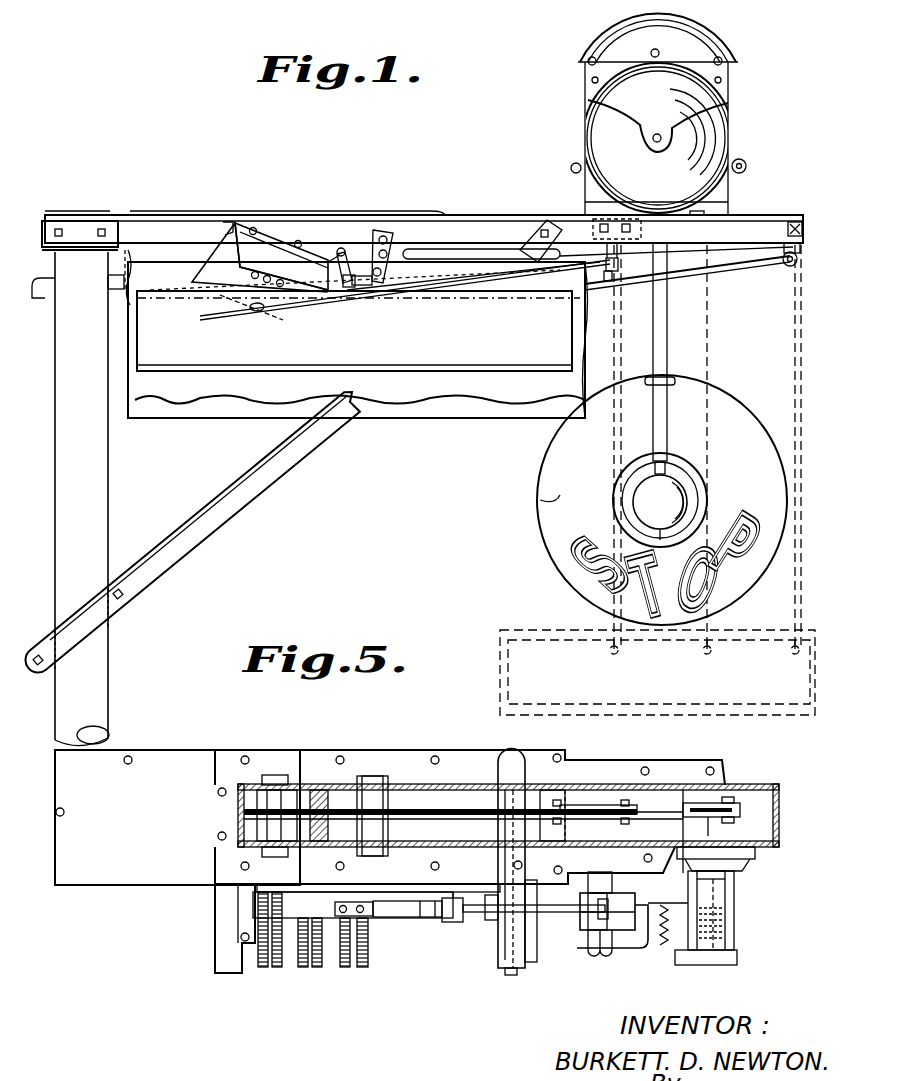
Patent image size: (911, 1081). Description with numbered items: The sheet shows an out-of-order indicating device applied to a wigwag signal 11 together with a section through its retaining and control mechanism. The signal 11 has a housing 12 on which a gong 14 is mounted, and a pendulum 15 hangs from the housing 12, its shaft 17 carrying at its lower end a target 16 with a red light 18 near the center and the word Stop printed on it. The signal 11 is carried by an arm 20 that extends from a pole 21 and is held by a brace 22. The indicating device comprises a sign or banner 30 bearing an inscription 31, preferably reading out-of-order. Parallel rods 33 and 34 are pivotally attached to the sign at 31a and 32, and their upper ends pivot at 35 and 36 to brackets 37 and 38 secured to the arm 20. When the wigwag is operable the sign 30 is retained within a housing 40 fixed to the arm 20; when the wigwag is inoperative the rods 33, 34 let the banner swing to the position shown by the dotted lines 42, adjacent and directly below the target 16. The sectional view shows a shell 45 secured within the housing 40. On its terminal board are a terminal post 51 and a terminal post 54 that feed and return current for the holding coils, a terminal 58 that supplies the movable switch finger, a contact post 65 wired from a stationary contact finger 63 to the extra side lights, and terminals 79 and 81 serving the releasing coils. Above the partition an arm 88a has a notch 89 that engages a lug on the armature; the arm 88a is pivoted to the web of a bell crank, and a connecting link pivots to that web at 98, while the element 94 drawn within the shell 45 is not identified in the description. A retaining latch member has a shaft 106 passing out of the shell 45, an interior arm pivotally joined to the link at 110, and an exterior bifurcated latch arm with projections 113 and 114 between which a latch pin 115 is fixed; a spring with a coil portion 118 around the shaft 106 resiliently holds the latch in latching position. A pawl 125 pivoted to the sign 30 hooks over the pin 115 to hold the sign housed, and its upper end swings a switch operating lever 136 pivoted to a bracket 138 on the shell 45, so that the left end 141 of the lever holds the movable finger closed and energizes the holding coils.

In FIG. 1, the wigwag signal 11 is at (720, 195).
In FIG. 1, the housing 12 is at (735, 160).
In FIG. 1, the gong 14 is at (605, 118).
In FIG. 1, the pendulum 15 is at (710, 410).
In FIG. 1, the target 16 is at (555, 512).
In FIG. 1, the shaft 17 is at (660, 352).
In FIG. 1, the red light 18 is at (666, 490).
In FIG. 1, the arm 20 is at (447, 230).
In FIG. 1, the pole 21 is at (100, 535).
In FIG. 1, the brace 22 is at (175, 548).
In FIG. 1, the sign 30 is at (370, 362).
In FIG. 1, the inscription 31 is at (418, 362).
In FIG. 1, the pivot 31a is at (258, 312).
In FIG. 1, the pivot 32 is at (340, 305).
In FIG. 1, the rod 33 is at (388, 295).
In FIG. 1, the rod 34 is at (640, 300).
In FIG. 1, the pivot 35 is at (660, 270).
In FIG. 1, the pivot 36 is at (790, 272).
In FIG. 1, the bracket 37 is at (705, 243).
In FIG. 1, the bracket 38 is at (745, 262).
In FIG. 1, the housing 40 is at (470, 408).
In FIG. 1, the dotted lines 42 is at (500, 645).
In FIG. 5, the shell 45 is at (188, 878).
In FIG. 5, the terminal post 51 is at (276, 970).
In FIG. 5, the terminal post 54 is at (320, 968).
In FIG. 5, the terminal 58 is at (350, 968).
In FIG. 5, the stationary contact finger 63 is at (395, 910).
In FIG. 5, the contact post 65 is at (368, 953).
In FIG. 5, the terminal 79 is at (304, 968).
In FIG. 5, the terminal 81 is at (260, 970).
In FIG. 5, the arm 88a is at (440, 815).
In FIG. 5, the notch 89 is at (297, 785).
In FIG. 5, the collar 94 is at (375, 808).
In FIG. 5, the pivot 98 is at (625, 800).
In FIG. 5, the shaft 106 is at (708, 833).
In FIG. 5, the pivotal connection 110 is at (728, 797).
In FIG. 5, the projection 113 is at (582, 893).
In FIG. 5, the projection 114 is at (660, 948).
In FIG. 5, the latch pin 115 is at (602, 956).
In FIG. 5, the coil portion 118 is at (738, 935).
In FIG. 5, the pawl 125 is at (598, 958).
In FIG. 5, the switch operating lever 136 is at (537, 912).
In FIG. 5, the bracket 138 is at (500, 962).
In FIG. 5, the left end 141 is at (473, 925).